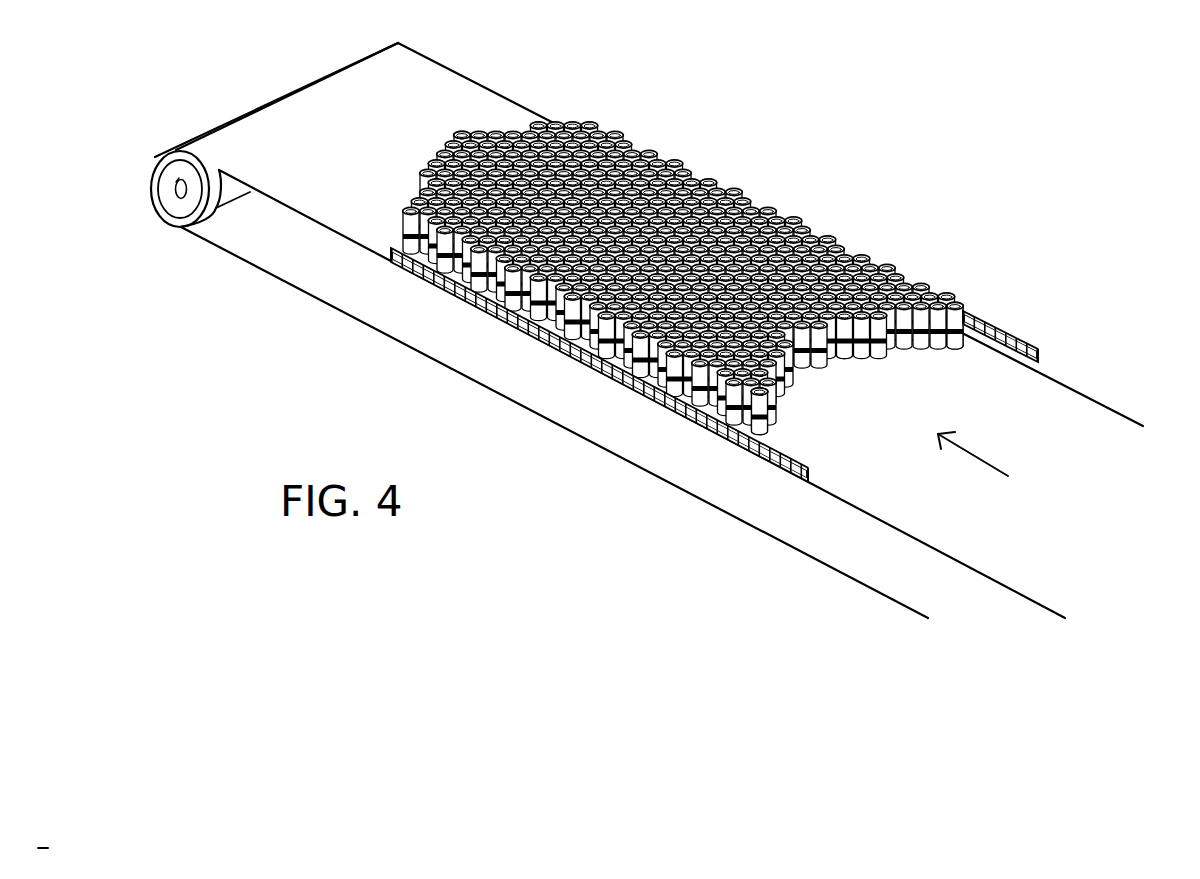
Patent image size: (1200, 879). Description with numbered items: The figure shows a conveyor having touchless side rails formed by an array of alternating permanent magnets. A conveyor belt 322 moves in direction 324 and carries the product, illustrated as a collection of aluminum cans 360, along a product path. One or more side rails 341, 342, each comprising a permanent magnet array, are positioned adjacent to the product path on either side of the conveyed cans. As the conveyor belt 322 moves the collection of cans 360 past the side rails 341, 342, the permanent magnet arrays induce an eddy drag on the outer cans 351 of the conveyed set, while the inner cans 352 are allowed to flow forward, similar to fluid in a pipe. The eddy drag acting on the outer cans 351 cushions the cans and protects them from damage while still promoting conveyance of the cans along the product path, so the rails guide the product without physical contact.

The conveyor belt 322 is at (1105, 403).
The direction 324 is at (977, 461).
The side rail 341 is at (706, 428).
The side rail 342 is at (984, 314).
The outer cans 351 is at (952, 339).
The inner cans 352 is at (454, 124).
The aluminum cans 360 is at (650, 138).